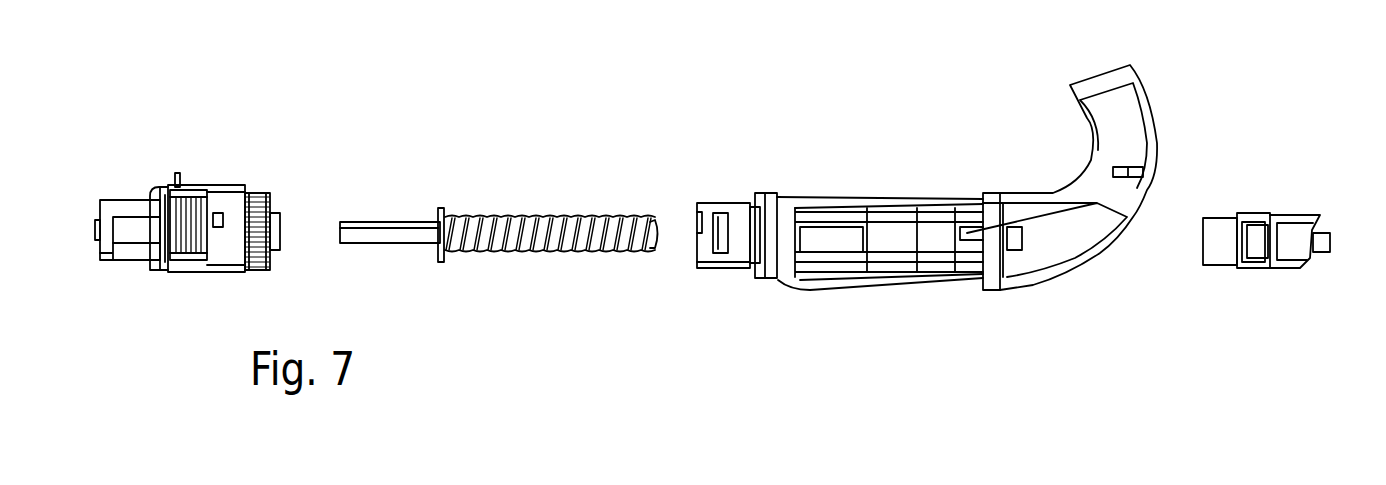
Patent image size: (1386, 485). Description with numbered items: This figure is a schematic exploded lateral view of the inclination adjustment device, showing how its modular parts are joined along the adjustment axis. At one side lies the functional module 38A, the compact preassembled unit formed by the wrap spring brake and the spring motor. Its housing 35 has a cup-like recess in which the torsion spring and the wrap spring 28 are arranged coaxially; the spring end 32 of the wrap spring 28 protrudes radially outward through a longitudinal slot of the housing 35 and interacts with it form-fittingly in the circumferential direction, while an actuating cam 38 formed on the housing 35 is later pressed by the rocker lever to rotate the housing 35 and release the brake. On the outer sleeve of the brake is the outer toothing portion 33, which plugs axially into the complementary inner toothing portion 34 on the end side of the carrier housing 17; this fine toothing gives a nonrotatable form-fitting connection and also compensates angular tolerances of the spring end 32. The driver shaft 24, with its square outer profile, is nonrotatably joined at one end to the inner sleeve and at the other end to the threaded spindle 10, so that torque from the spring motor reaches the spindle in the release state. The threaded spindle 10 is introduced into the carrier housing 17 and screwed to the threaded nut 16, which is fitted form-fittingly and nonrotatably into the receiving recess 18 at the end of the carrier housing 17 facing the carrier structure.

The functional module 38A is at (207, 122).
The actuating cam 38 is at (120, 217).
The housing 35 is at (130, 193).
The wrap spring 28 is at (188, 243).
The spring end 32 is at (178, 173).
The toothing portion 33 is at (257, 193).
The driver shaft 24 is at (390, 243).
The threaded spindle 10 is at (517, 213).
The toothing portion 34 is at (692, 212).
The carrier housing 17 is at (890, 203).
The receiving recess 18 is at (1070, 285).
The threaded nut 16 is at (1252, 213).